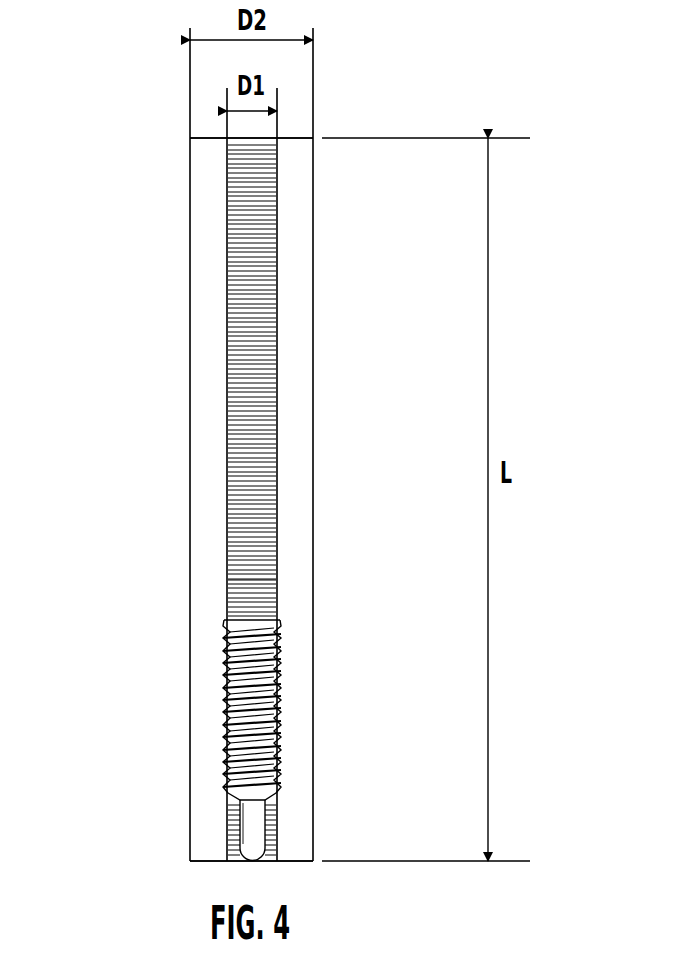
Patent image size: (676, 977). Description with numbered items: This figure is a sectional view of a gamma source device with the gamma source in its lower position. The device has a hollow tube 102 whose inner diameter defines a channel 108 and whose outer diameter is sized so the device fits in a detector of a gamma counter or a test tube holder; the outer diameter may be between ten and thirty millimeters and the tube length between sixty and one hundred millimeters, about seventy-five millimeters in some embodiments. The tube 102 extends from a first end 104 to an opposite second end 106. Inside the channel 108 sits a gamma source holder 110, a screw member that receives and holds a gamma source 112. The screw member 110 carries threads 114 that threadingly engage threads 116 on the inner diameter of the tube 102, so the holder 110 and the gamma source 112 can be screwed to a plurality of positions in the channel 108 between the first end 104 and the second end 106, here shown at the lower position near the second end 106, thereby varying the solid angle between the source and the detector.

The tube 102 is at (190, 403).
The first end 104 is at (172, 151).
The second end 106 is at (160, 844).
The channel 108 is at (228, 271).
The gamma source holder 110 is at (241, 710).
The gamma source 112 is at (250, 823).
The threads 114 is at (278, 657).
The threads 116 is at (255, 583).